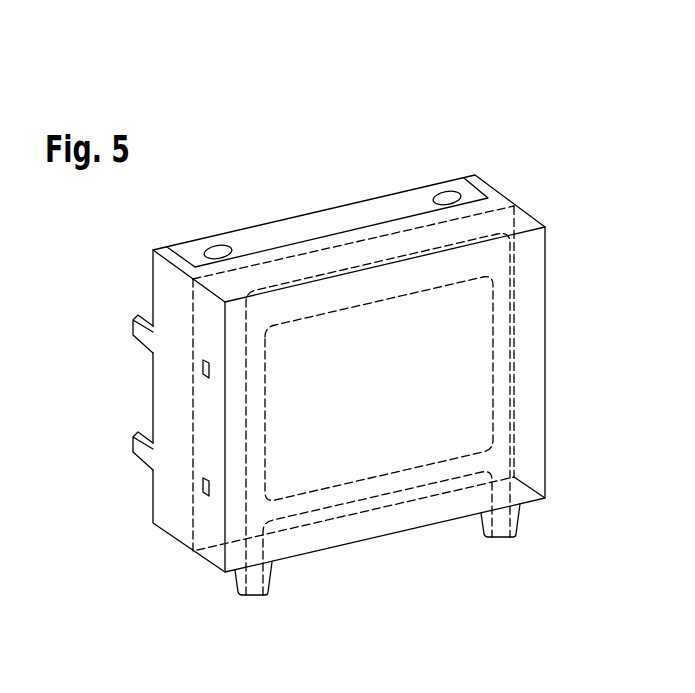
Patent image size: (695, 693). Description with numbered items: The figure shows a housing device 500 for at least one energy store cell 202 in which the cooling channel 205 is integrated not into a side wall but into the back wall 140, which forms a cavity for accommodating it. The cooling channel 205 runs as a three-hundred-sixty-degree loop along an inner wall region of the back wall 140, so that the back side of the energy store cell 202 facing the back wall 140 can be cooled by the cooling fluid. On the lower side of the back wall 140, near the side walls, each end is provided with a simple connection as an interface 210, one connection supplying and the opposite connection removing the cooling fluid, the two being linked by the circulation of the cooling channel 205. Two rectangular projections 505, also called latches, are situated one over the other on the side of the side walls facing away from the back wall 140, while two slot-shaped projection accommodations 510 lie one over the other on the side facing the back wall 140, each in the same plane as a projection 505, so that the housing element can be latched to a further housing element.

The housing device 500 is at (95, 255).
The energy store cell 202 is at (336, 224).
The cooling channel 205 is at (502, 347).
The back wall 140 is at (399, 391).
The interface 210 is at (255, 596).
The projection 505 is at (133, 322).
The projection accommodation 510 is at (203, 367).